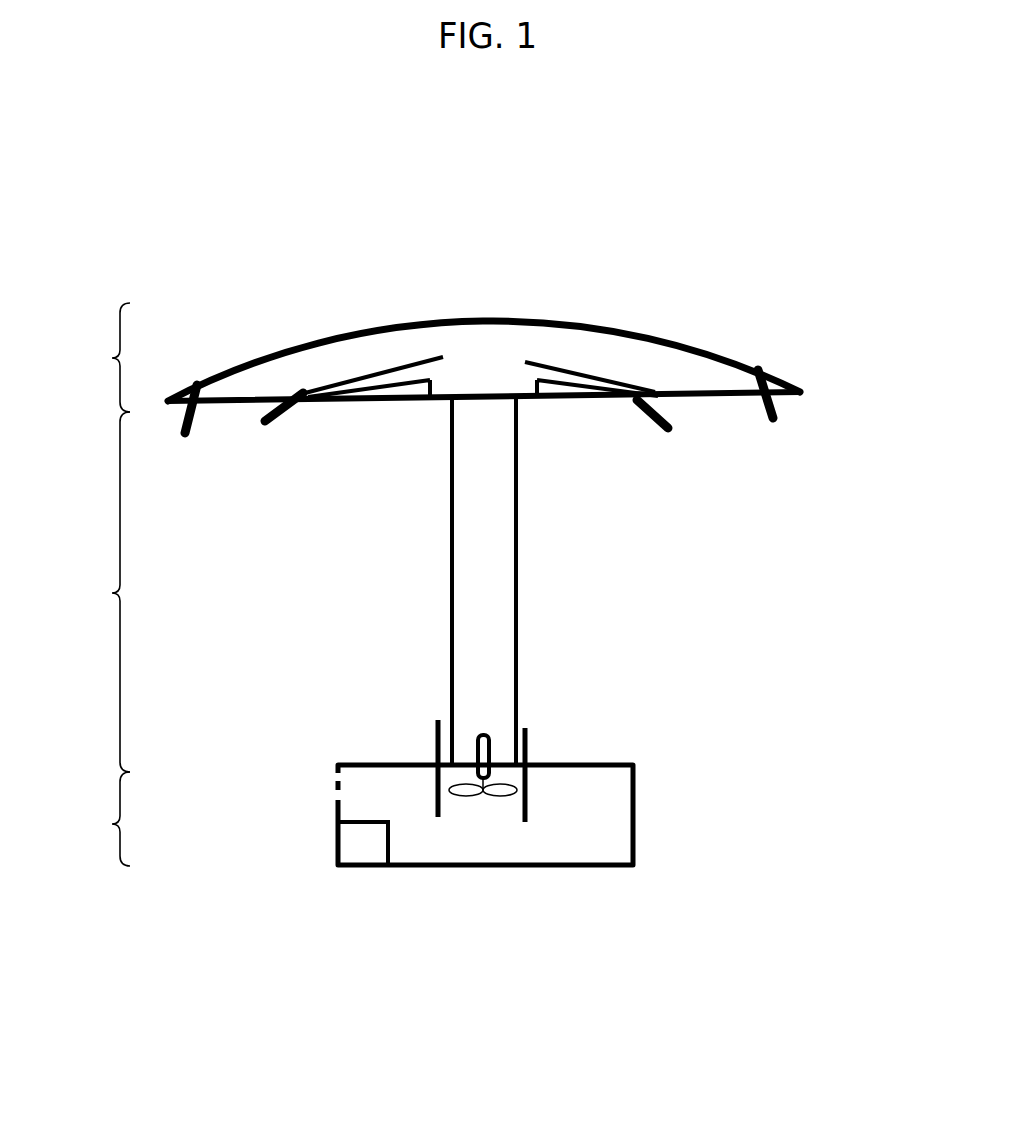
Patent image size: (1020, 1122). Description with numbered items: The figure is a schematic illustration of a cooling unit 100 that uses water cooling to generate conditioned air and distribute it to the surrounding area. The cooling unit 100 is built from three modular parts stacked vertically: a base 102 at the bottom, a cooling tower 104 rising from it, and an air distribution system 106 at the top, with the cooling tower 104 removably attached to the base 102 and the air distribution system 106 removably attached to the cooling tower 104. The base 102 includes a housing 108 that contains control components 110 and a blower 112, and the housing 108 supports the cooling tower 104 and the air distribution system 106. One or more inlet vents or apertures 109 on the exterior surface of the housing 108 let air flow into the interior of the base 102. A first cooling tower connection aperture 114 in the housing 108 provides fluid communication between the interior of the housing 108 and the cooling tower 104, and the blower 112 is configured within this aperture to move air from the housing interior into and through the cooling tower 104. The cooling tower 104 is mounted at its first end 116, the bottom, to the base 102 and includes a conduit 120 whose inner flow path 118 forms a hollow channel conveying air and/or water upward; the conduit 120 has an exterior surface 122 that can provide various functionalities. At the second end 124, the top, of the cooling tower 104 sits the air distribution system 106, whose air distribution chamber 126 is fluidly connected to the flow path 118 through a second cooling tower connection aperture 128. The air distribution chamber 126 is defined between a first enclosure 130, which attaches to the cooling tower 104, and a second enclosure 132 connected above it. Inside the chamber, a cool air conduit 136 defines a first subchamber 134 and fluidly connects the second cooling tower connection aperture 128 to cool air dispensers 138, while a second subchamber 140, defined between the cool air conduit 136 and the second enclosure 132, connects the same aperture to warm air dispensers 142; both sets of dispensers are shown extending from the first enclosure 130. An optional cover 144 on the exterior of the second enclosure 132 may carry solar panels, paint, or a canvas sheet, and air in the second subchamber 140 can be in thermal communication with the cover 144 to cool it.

The cooling unit 100 is at (790, 282).
The base 102 is at (112, 824).
The cooling tower 104 is at (112, 593).
The air distribution system 106 is at (112, 358).
The housing 108 is at (633, 793).
The inlet vents or apertures 109 is at (322, 783).
The control components 110 is at (350, 840).
The blower 112 is at (485, 795).
The first cooling tower connection aperture 114 is at (463, 813).
The first end 116 is at (414, 745).
The inner flow path 118 is at (492, 585).
The conduit 120 is at (517, 644).
The exterior surface 122 is at (451, 573).
The second end 124 is at (538, 413).
The air distribution chamber 126 is at (460, 346).
The second cooling tower connection aperture 128 is at (493, 380).
The first enclosure 130 is at (417, 403).
The second enclosure 132 is at (398, 322).
The first subchamber 134 is at (347, 382).
The cool air conduit 136 is at (340, 382).
The cool air dispensers 138 is at (270, 426).
The second subchamber 140 is at (258, 372).
The warm air dispensers 142 is at (186, 438).
The cover 144 is at (527, 360).